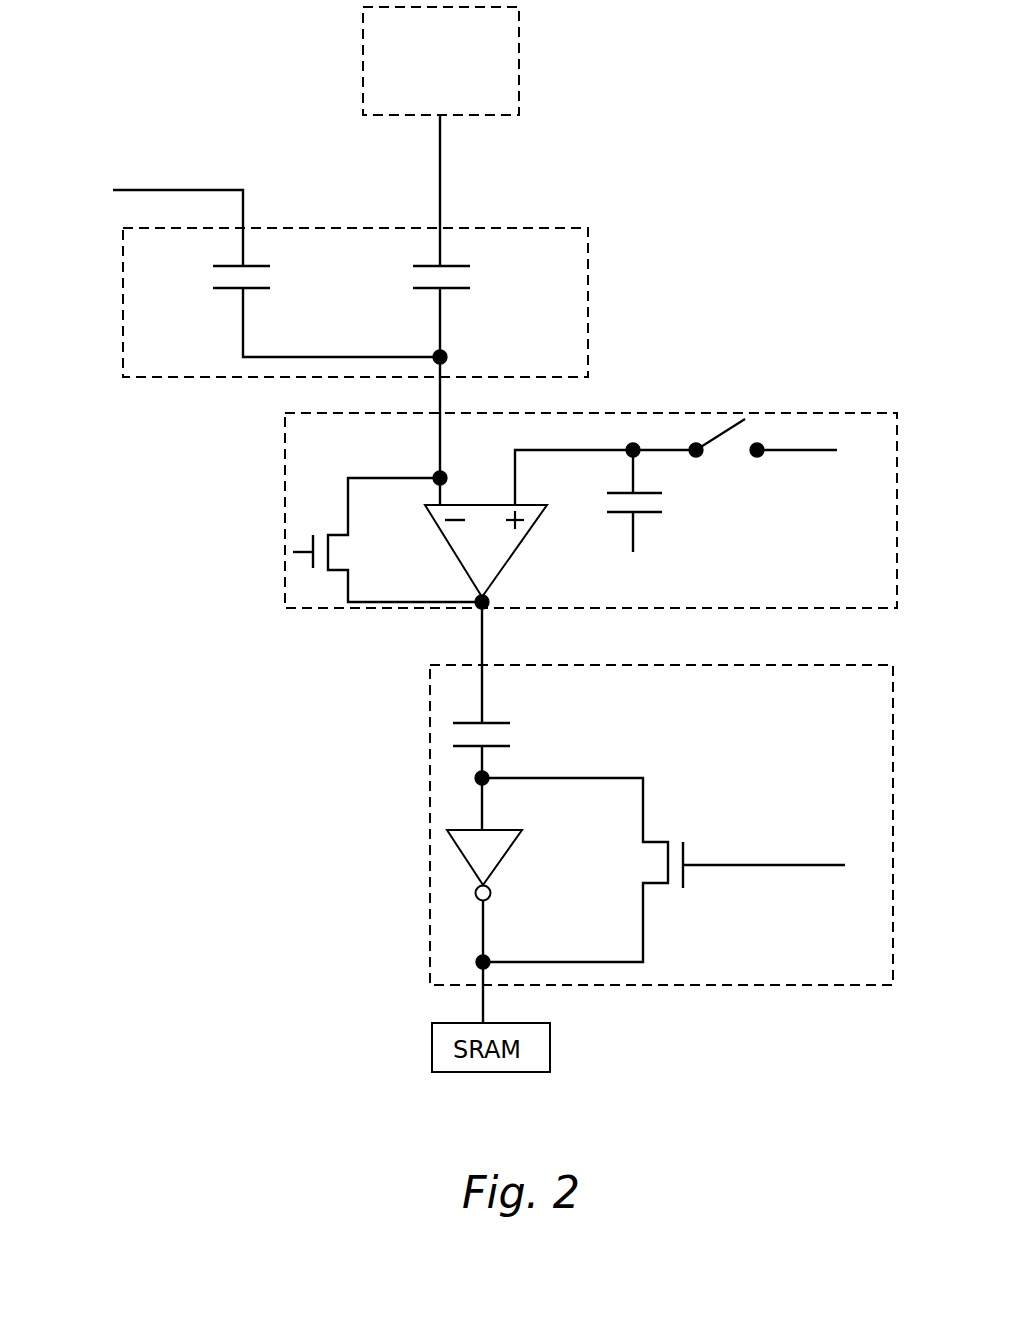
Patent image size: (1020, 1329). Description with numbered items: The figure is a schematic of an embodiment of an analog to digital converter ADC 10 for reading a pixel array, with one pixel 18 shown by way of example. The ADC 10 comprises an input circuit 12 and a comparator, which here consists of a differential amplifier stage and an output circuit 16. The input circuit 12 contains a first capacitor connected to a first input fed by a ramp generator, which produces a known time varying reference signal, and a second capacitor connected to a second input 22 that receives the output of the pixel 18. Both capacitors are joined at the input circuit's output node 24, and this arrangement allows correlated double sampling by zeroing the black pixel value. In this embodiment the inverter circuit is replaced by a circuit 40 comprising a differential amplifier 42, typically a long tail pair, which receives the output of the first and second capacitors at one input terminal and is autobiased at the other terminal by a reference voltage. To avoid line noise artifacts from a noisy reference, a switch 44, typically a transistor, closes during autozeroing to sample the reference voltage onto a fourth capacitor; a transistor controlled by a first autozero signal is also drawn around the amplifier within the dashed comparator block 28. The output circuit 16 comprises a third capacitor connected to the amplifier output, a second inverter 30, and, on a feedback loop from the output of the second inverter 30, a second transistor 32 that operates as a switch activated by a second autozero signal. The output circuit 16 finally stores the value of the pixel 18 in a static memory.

The analog to digital converter 10 is at (185, 416).
The input circuit 12 is at (163, 322).
The output circuit 16 is at (603, 812).
The pixel 18 is at (478, 63).
The second input 22 is at (438, 414).
The output node 24 is at (447, 353).
The comparator block 28 is at (532, 499).
The second inverter 30 is at (493, 850).
The second transistor 32 is at (660, 885).
The circuit 40 is at (322, 513).
The differential amplifier 42 is at (467, 542).
The switch 44 is at (725, 432).